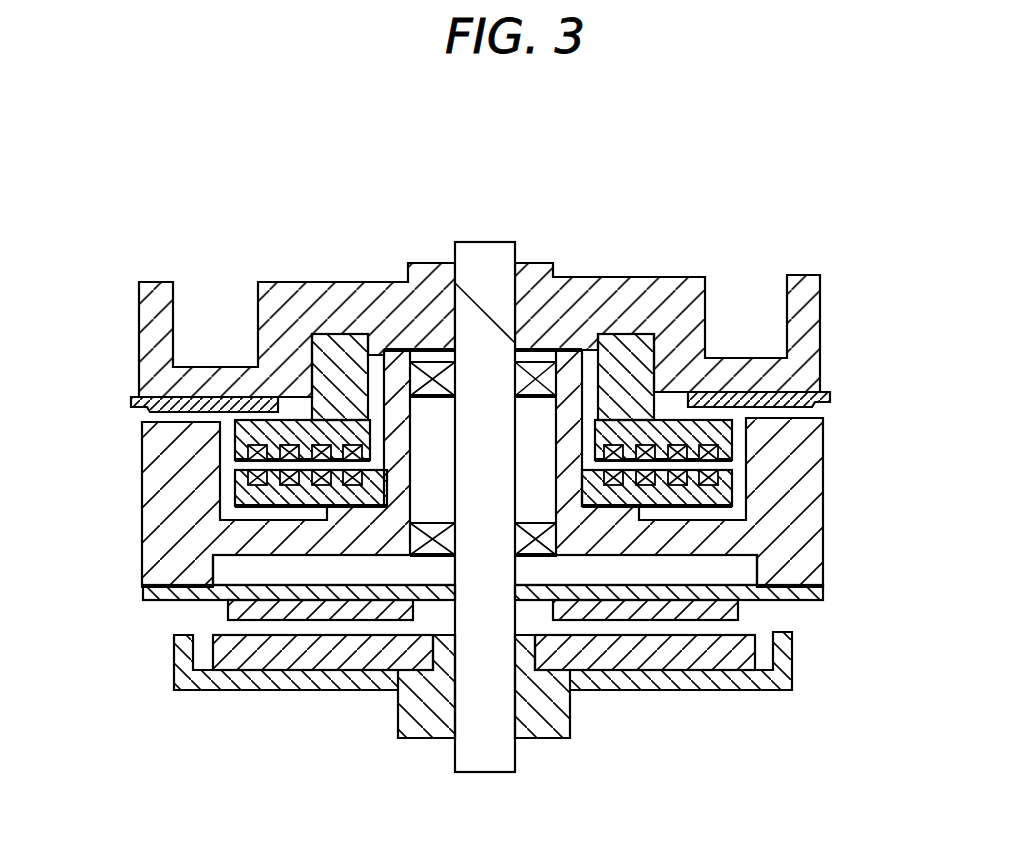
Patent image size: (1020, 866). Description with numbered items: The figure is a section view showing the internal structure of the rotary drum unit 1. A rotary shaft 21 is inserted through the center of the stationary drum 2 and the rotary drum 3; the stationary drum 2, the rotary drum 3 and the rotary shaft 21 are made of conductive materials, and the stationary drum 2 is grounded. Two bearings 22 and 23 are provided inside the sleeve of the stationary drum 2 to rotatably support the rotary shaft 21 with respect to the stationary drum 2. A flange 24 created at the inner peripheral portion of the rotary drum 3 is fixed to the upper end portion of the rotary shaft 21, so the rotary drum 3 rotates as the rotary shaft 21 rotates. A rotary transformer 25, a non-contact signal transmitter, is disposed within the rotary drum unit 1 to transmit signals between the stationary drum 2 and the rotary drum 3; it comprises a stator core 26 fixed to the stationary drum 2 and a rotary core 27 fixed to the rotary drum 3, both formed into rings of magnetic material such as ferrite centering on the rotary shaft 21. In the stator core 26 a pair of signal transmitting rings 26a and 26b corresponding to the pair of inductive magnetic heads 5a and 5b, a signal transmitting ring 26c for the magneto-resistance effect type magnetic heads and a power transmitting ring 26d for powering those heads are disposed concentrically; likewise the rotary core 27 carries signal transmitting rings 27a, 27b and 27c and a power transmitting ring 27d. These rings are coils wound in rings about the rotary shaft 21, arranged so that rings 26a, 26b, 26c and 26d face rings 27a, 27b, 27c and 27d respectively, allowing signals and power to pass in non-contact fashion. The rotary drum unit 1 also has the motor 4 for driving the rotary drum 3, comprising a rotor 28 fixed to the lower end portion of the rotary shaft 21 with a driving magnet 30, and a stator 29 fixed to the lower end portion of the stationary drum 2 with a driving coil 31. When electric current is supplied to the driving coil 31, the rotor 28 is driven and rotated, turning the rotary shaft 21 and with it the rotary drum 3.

The rotary drum unit 1 is at (822, 252).
The stationary drum 2 is at (818, 557).
The rotary drum 3 is at (816, 332).
The motor 4 is at (320, 700).
The inductive magnetic head 5a is at (833, 396).
The inductive magnetic head 5b is at (130, 404).
The rotary shaft 21 is at (483, 254).
The bearing 22 is at (428, 370).
The bearing 23 is at (513, 510).
The flange 24 is at (531, 370).
The rotary transformer 25 is at (888, 421).
The stator core 26 is at (733, 489).
The signal transmitting ring 26a is at (612, 485).
The signal transmitting ring 26b is at (644, 485).
The signal transmitting ring 26c is at (676, 485).
The power transmitting ring 26d is at (708, 485).
The rotary core 27 is at (730, 441).
The signal transmitting ring 27a is at (613, 443).
The signal transmitting ring 27b is at (644, 443).
The signal transmitting ring 27c is at (676, 443).
The power transmitting ring 27d is at (708, 443).
The rotor 28 is at (435, 724).
The stator 29 is at (153, 596).
The driving magnet 30 is at (238, 667).
The driving coil 31 is at (228, 612).